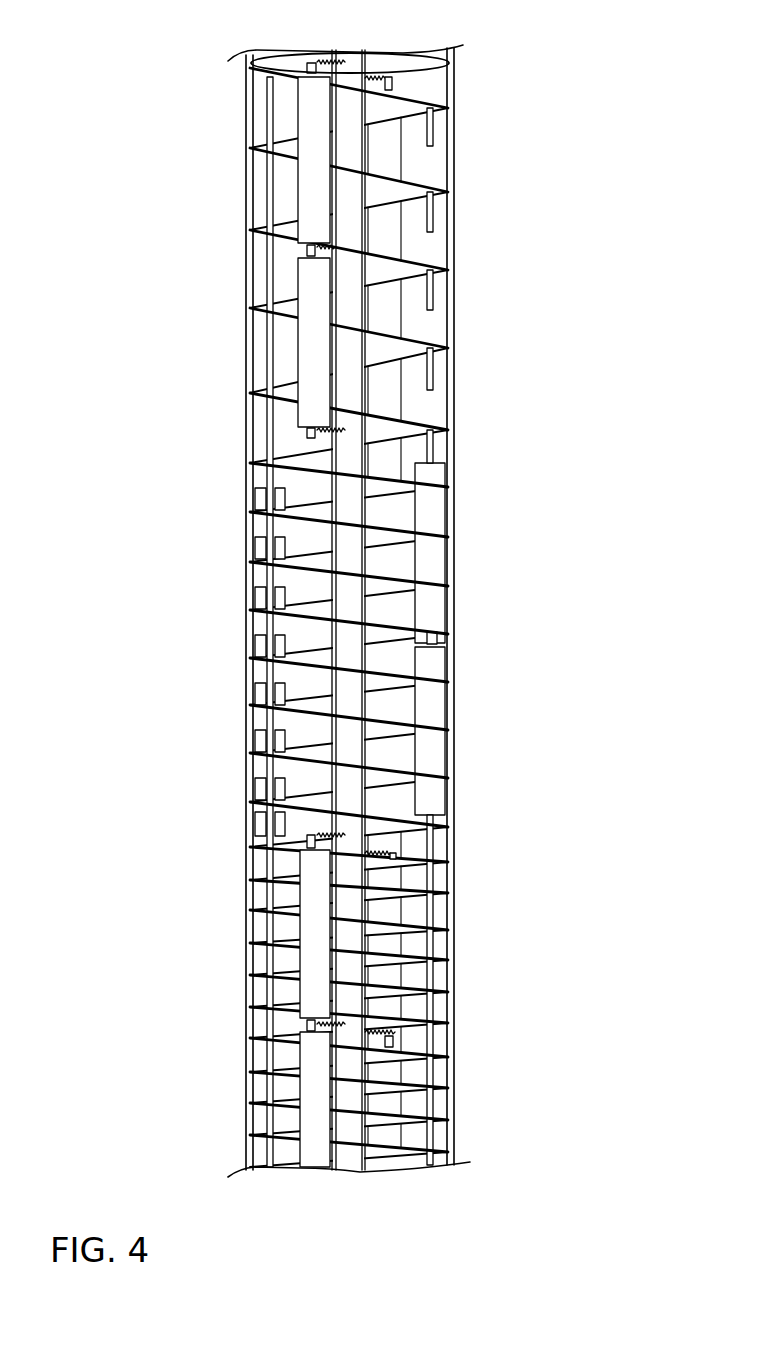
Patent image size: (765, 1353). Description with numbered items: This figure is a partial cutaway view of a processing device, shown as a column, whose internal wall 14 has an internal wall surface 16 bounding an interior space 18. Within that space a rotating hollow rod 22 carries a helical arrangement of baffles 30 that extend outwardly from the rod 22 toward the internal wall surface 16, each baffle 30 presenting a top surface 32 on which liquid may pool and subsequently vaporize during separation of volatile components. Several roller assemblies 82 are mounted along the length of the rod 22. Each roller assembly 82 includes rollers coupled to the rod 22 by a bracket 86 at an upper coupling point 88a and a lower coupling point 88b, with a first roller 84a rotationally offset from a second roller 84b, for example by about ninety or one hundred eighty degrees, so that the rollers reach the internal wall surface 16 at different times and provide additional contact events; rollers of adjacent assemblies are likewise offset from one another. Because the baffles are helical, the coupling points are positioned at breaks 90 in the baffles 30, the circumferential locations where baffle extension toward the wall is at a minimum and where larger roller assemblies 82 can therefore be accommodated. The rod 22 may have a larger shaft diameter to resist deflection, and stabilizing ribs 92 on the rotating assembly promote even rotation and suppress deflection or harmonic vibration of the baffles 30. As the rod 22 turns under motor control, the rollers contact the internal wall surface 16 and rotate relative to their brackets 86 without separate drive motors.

The internal wall 14 is at (250, 388).
The internal wall surface 16 is at (257, 369).
The interior space 18 is at (303, 499).
The rod 22 is at (340, 643).
The baffle 30 is at (292, 690).
The top surface 32 is at (299, 699).
The roller assembly 82 is at (291, 284).
The first roller 84a is at (303, 198).
The second roller 84b is at (387, 232).
The bracket 86 is at (270, 67).
The upper coupling point 88a is at (360, 63).
The lower coupling point 88b is at (356, 373).
The breaks 90 is at (417, 113).
The stabilizing ribs 92 is at (417, 440).